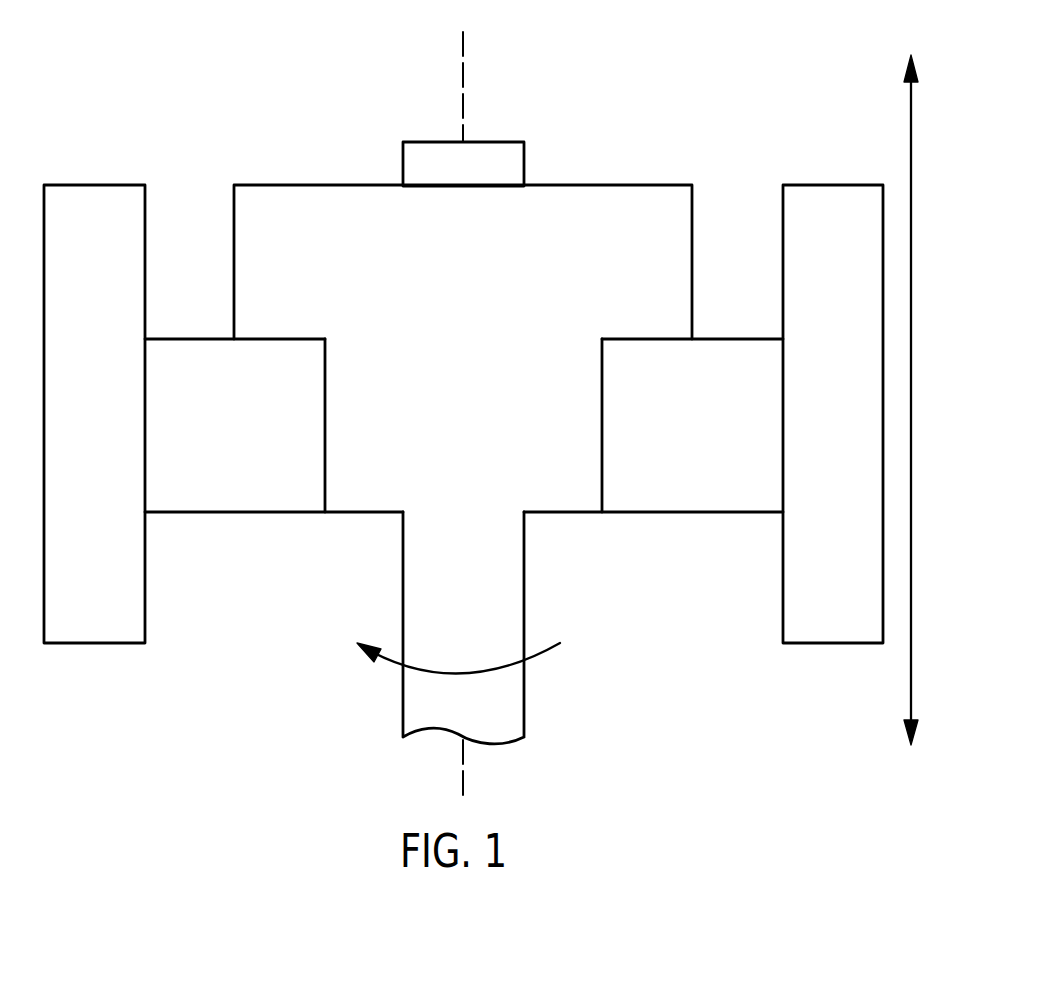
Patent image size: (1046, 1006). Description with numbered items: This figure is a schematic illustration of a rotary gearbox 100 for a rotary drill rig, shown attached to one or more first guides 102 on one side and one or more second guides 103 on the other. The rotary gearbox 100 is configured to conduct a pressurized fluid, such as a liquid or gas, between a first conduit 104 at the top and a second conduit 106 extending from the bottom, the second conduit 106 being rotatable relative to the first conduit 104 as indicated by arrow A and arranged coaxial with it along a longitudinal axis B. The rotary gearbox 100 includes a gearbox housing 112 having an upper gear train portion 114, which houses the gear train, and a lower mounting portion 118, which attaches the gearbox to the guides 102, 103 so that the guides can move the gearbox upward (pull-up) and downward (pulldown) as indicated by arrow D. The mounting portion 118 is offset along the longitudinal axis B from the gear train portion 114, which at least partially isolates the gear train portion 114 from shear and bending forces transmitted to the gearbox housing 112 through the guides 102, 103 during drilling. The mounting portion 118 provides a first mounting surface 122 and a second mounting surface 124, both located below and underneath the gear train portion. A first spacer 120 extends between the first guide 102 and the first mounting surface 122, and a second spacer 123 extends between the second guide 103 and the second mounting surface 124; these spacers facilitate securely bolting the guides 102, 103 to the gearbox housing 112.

The rotary gearbox 100 is at (699, 88).
The first guide 102 is at (842, 210).
The second guide 103 is at (103, 210).
The first conduit 104 is at (502, 172).
The second conduit 106 is at (502, 593).
The gearbox housing 112 is at (693, 260).
The gear train portion 114 is at (222, 185).
The mounting portion 118 is at (310, 347).
The first spacer 120 is at (678, 492).
The first mounting surface 122 is at (602, 447).
The second spacer 123 is at (208, 492).
The second mounting surface 124 is at (322, 458).
The arrow A is at (393, 665).
The longitudinal axis B is at (463, 88).
The arrow D is at (912, 370).